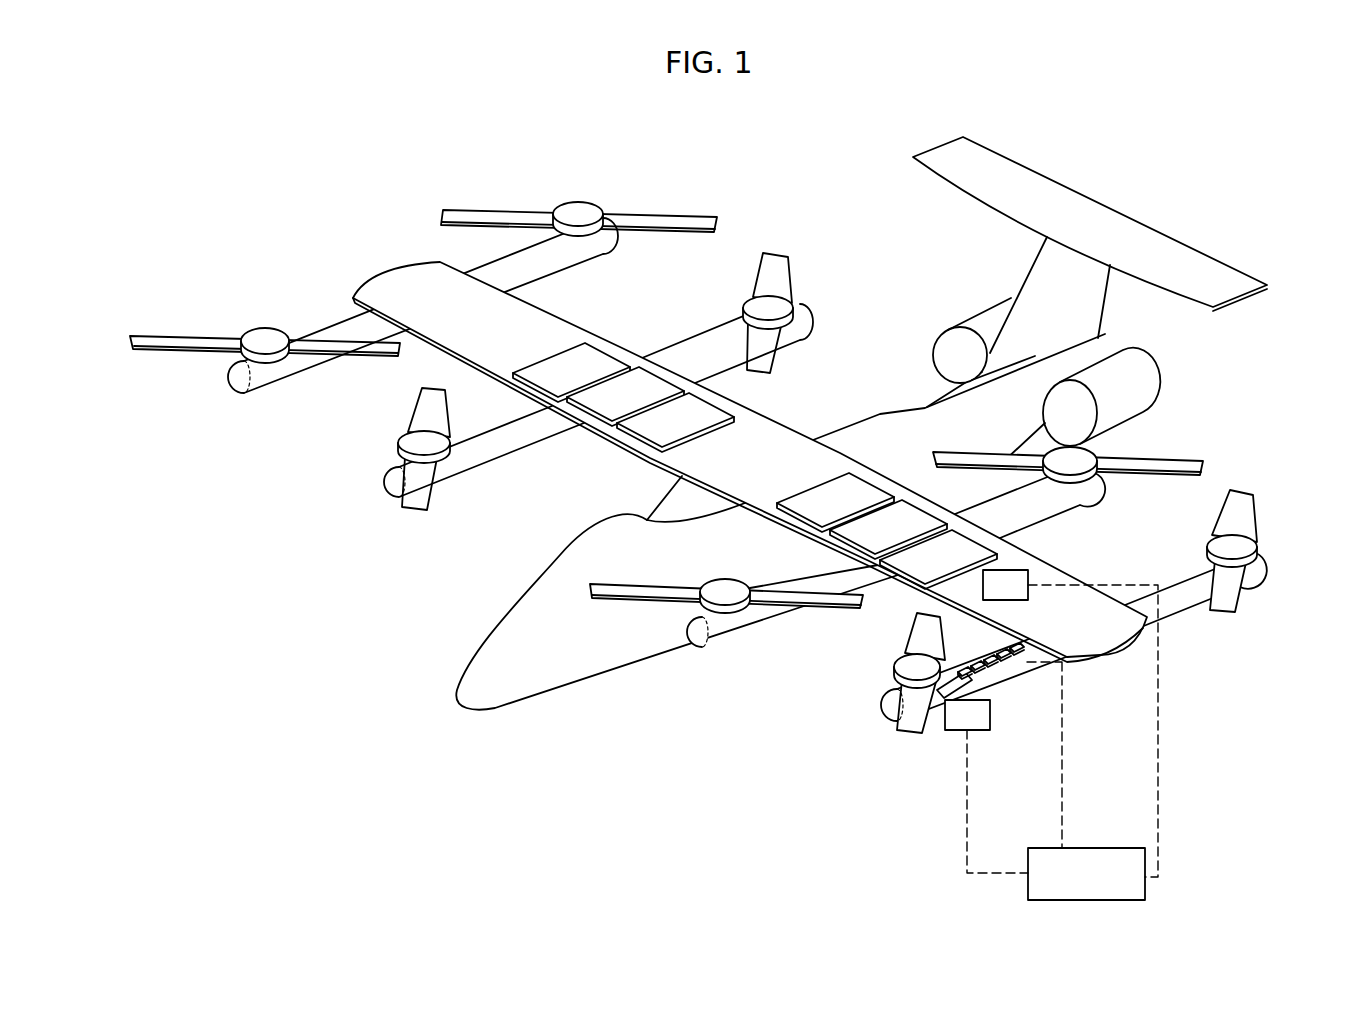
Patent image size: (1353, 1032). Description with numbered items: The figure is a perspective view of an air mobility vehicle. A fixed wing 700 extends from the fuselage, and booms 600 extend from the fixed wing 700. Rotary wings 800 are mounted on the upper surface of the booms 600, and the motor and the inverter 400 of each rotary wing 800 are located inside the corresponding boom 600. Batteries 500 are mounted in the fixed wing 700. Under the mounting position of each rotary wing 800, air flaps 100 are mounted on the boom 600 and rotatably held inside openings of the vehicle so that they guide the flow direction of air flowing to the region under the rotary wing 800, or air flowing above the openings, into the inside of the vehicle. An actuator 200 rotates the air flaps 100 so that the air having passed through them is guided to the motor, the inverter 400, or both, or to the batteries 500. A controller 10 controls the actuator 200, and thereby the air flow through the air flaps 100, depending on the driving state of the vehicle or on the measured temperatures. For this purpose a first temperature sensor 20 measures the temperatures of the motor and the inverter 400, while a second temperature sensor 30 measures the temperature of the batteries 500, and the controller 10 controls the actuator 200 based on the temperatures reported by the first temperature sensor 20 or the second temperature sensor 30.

The controller 10 is at (1062, 742).
The first temperature sensor 20 is at (967, 716).
The second temperature sensor 30 is at (1005, 586).
The air flaps 100 is at (903, 648).
The actuator 200 is at (1000, 690).
The inverter 400 is at (897, 686).
The batteries 500 is at (1020, 540).
The booms 600 is at (1180, 597).
The fixed wing 700 is at (1047, 570).
The rotary wings 800 is at (897, 705).